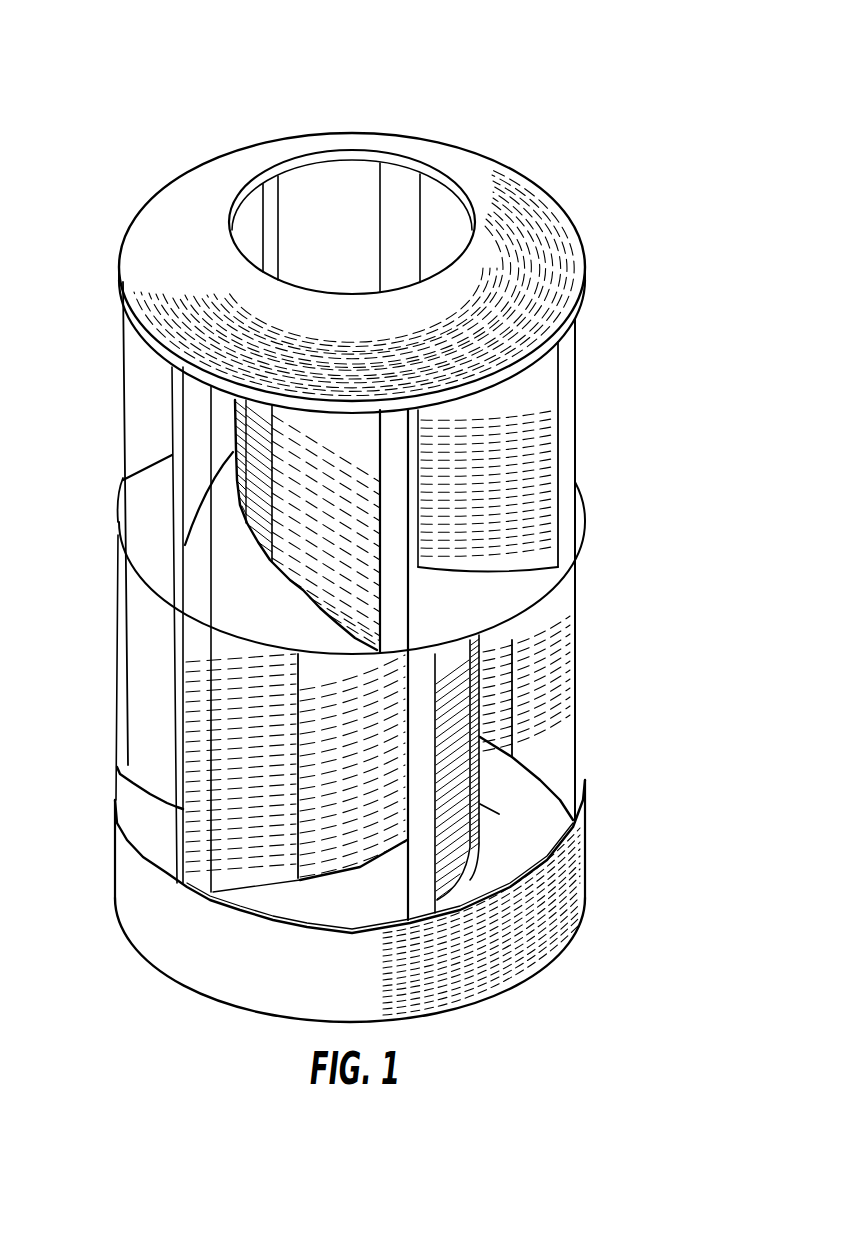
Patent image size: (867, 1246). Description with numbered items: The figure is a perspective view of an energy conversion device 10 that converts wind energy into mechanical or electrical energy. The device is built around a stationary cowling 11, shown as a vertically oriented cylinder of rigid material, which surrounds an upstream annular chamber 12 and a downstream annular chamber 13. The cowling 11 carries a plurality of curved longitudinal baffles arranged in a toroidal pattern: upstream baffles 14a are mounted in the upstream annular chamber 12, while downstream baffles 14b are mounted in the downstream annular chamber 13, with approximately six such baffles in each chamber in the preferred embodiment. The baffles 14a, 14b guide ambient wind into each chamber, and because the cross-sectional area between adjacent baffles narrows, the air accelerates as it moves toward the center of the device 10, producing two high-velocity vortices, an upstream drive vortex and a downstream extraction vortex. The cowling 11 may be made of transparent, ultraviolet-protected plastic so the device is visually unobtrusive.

The energy conversion device 10 is at (399, 517).
The stationary cowling 11 is at (487, 159).
The upstream annular chamber 12 is at (512, 790).
The downstream annular chamber 13 is at (496, 546).
The upstream baffles 14a is at (137, 673).
The downstream baffles 14b is at (522, 467).